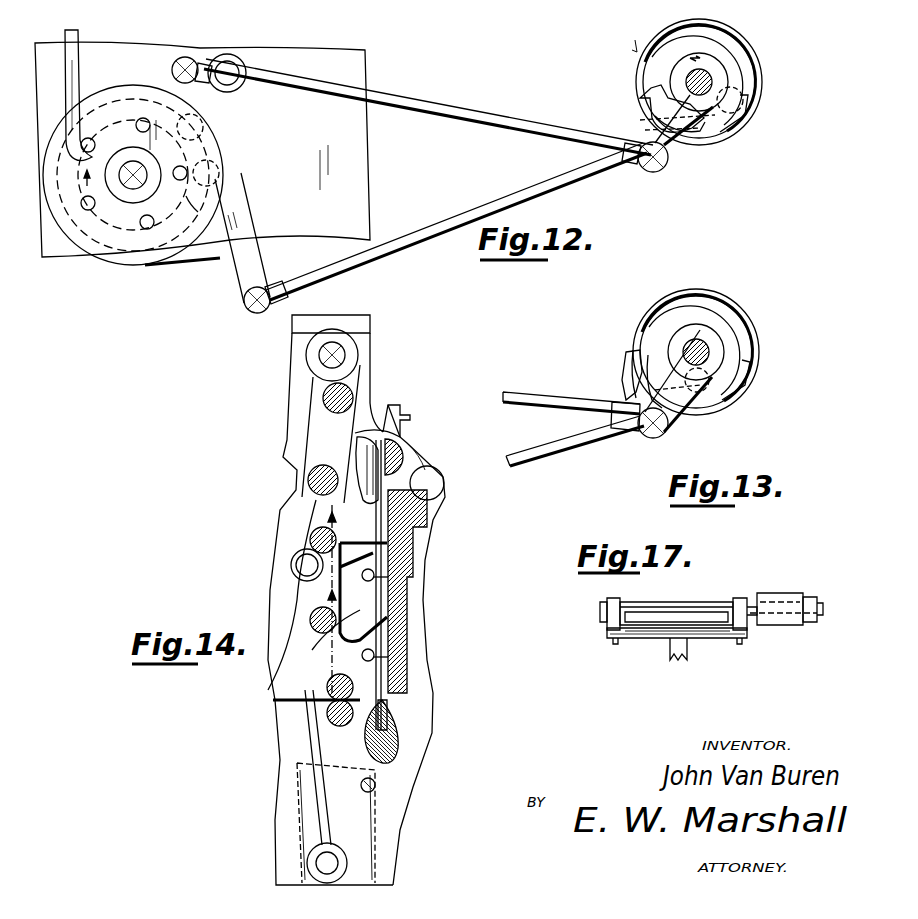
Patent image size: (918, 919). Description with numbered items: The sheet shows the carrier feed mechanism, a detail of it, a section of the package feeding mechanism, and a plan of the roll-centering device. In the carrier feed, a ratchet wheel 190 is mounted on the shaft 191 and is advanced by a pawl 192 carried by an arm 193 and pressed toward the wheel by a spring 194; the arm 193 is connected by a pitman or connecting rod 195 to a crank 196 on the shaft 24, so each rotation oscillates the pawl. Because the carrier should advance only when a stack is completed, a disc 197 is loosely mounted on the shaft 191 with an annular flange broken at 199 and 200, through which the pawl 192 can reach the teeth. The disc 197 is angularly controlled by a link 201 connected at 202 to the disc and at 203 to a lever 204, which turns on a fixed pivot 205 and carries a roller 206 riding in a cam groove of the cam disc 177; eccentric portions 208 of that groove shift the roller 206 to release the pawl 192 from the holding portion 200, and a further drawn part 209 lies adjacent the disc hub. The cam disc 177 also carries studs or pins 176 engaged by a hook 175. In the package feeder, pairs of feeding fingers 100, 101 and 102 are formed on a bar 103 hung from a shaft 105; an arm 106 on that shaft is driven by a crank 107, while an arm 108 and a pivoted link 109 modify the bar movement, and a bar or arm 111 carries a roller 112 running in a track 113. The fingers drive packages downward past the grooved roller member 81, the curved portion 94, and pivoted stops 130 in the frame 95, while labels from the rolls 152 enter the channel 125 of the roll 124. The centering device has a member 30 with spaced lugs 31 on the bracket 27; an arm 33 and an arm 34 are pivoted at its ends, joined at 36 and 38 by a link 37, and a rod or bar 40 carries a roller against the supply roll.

In FIG. 12, the hook 175 is at (80, 33).
In FIG. 12, the cam disc 177 is at (116, 86).
In FIG. 12, the crank 196 is at (192, 57).
In FIG. 12, the shaft 24 is at (238, 60).
In FIG. 12, the pitman or connecting rod 195 is at (408, 110).
In FIG. 13, the pitman or connecting rod 195 is at (510, 393).
In FIG. 12, the fixed pivot 205 is at (198, 126).
In FIG. 12, the roller 206 is at (200, 170).
In FIG. 12, the offset or eccentric portions 208 is at (193, 173).
In FIG. 12, the slot 209 is at (200, 213).
In FIG. 12, the lever 204 is at (247, 241).
In FIG. 12, the studs or pins 176 is at (147, 229).
In FIG. 12, the connection 203 is at (251, 306).
In FIG. 12, the link 201 is at (545, 187).
In FIG. 13, the link 201 is at (542, 462).
In FIG. 12, the broken portion of flange 199 is at (637, 92).
In FIG. 13, the broken portion of flange 199 is at (670, 305).
In FIG. 12, the pawl 192 is at (623, 97).
In FIG. 13, the pawl 192 is at (625, 360).
In FIG. 12, the shaft 191 is at (702, 78).
In FIG. 13, the shaft 191 is at (703, 343).
In FIG. 12, the ratchet wheel 190 is at (737, 68).
In FIG. 13, the ratchet wheel 190 is at (737, 337).
In FIG. 12, the disc 197 is at (758, 100).
In FIG. 13, the disc 197 is at (757, 370).
In FIG. 12, the connection 202 is at (737, 112).
In FIG. 13, the connection 202 is at (723, 403).
In FIG. 12, the arm 193 is at (723, 140).
In FIG. 13, the arm 193 is at (677, 426).
In FIG. 12, the broken portion of flange 200 is at (680, 155).
In FIG. 13, the broken portion of flange 200 is at (634, 350).
In FIG. 13, the spring 194 is at (615, 402).
In FIG. 14, the crank 107 is at (320, 387).
In FIG. 14, the arm 106 is at (320, 427).
In FIG. 14, the roller member 81 is at (400, 450).
In FIG. 14, the shaft 105 is at (307, 480).
In FIG. 14, the portion of machine 94 is at (420, 495).
In FIG. 14, the frame 95 is at (367, 497).
In FIG. 14, the link 109 is at (442, 518).
In FIG. 14, the arm 108 is at (310, 535).
In FIG. 14, the feeding fingers 100 is at (296, 567).
In FIG. 14, the bar 103 is at (313, 593).
In FIG. 14, the pivoted stops 130 is at (395, 586).
In FIG. 14, the feeding fingers 101 is at (358, 613).
In FIG. 14, the feeding fingers 102 is at (343, 640).
In FIG. 14, the rolls 152 is at (332, 720).
In FIG. 14, the bar or arm 111 is at (297, 753).
In FIG. 14, the track 113 is at (313, 813).
In FIG. 14, the roller 112 is at (307, 867).
In FIG. 14, the channel 125 is at (390, 722).
In FIG. 14, the roll 124 is at (400, 732).
In FIG. 17, the spaced lugs 31 is at (615, 598).
In FIG. 17, the member 30 is at (650, 620).
In FIG. 17, the bracket 27 is at (790, 597).
In FIG. 17, the arm 33 is at (607, 629).
In FIG. 17, the arm 34 is at (747, 632).
In FIG. 17, the connection 36 is at (615, 644).
In FIG. 17, the link 37 is at (655, 638).
In FIG. 17, the connection 38 is at (740, 644).
In FIG. 17, the rod or bar 40 is at (687, 650).